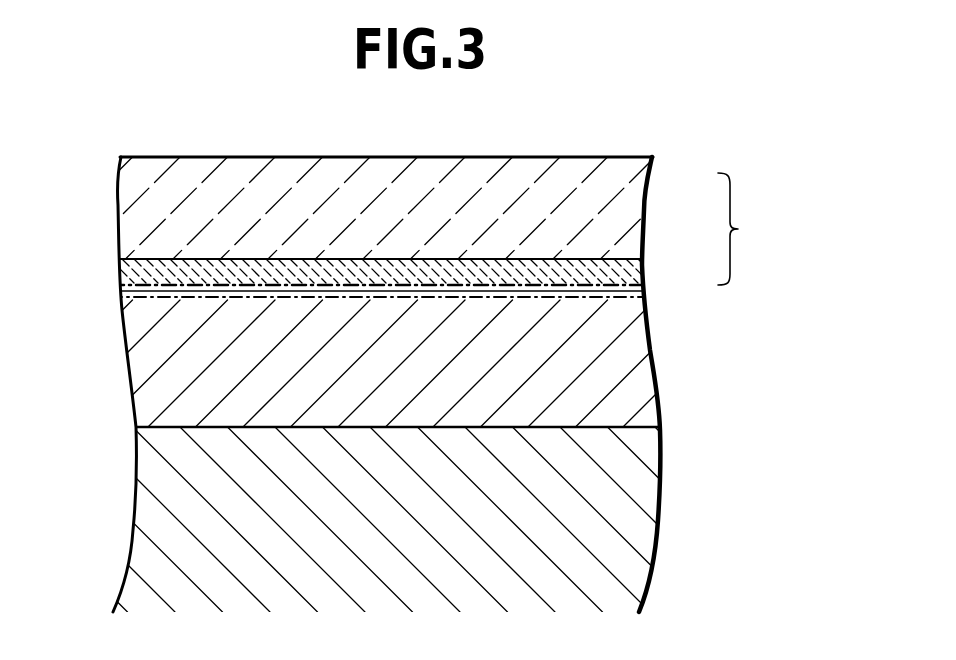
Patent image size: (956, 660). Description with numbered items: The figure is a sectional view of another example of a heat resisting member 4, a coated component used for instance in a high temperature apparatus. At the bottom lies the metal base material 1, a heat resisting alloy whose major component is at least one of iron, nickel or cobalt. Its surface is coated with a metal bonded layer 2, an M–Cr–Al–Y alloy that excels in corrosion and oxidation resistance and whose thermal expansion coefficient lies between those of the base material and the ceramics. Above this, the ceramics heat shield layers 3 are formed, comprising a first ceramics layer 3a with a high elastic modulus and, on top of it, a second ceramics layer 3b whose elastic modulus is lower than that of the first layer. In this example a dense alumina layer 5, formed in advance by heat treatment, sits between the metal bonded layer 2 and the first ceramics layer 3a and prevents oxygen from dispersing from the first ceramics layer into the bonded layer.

The metal base material 1 is at (647, 515).
The metal bonded layer 2 is at (647, 395).
The ceramics heat shield layers 3 is at (435, 229).
The first ceramics layer 3a is at (623, 276).
The second ceramics layer 3b is at (620, 212).
The heat resisting member 4 is at (656, 108).
The dense alumina layer 5 is at (633, 293).